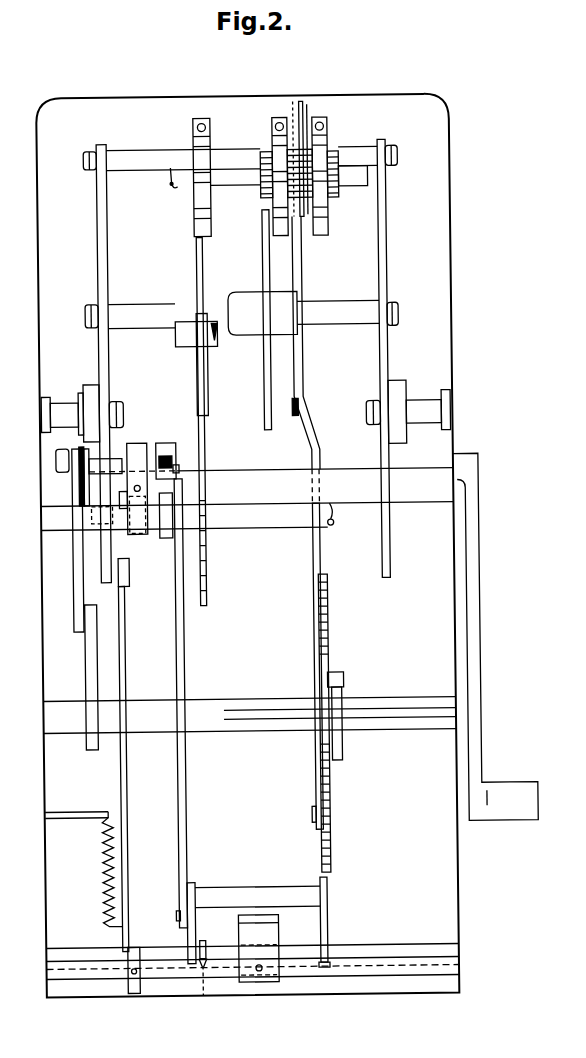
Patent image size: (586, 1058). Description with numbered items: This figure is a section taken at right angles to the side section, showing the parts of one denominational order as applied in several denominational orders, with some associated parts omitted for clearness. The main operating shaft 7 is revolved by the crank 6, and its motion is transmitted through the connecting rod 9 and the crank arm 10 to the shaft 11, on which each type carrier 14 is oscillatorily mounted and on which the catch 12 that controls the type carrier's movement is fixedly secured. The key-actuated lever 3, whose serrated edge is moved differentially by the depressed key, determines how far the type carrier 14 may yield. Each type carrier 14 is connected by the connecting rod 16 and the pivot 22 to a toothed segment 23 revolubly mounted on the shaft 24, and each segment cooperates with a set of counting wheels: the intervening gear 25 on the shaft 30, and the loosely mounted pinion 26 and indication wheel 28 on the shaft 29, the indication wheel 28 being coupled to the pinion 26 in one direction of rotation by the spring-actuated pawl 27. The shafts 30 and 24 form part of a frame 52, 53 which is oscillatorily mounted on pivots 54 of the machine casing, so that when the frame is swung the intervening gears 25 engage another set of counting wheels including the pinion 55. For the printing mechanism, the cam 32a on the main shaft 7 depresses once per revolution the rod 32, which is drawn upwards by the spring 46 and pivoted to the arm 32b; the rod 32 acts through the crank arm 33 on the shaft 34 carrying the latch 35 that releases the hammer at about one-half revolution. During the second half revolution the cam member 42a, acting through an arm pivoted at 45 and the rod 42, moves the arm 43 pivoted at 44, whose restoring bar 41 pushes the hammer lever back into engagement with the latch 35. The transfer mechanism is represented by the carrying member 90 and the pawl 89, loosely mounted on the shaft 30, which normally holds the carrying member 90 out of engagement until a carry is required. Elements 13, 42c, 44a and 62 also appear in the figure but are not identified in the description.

The lever 3 is at (207, 594).
The crank 6 is at (478, 640).
The main operating shaft 7 is at (281, 494).
The connecting rod 9 is at (77, 566).
The crank arm 10 is at (96, 655).
The shaft 11 is at (72, 735).
The catch 12 is at (341, 740).
The pawl 13 is at (343, 679).
The type carrier 14 is at (328, 628).
The connecting rod 16 is at (312, 558).
The pivot 22 is at (310, 422).
The toothed segment 23 is at (303, 281).
The shaft 24 is at (353, 320).
The intervening gear 25 is at (297, 117).
The pinion 26 is at (266, 192).
The spring actuated pawl 27 is at (276, 139).
The indication wheel 28 is at (199, 236).
The shaft 29 is at (183, 186).
The shaft 30 is at (146, 157).
The rod 32 is at (125, 606).
The cam 32a is at (135, 455).
The arm 32b is at (126, 545).
The crank arm 33 is at (136, 950).
The shaft 34 is at (366, 963).
The latch 35 is at (275, 935).
The restoring bar 41 is at (270, 897).
The rod 42 is at (184, 646).
The cam member 42a is at (181, 469).
The block 42c is at (165, 447).
The arm 43 is at (325, 931).
The pivot 44 is at (423, 946).
The pin 44a is at (203, 950).
The pivot 45 is at (238, 521).
The spring 46 is at (101, 870).
The frame part 52 is at (101, 264).
The frame part 53 is at (390, 254).
The pivot 54 is at (43, 427).
The pinion 55 is at (60, 412).
The lever 62 is at (207, 349).
The pawl 89 is at (314, 130).
The carrying member 90 is at (307, 130).